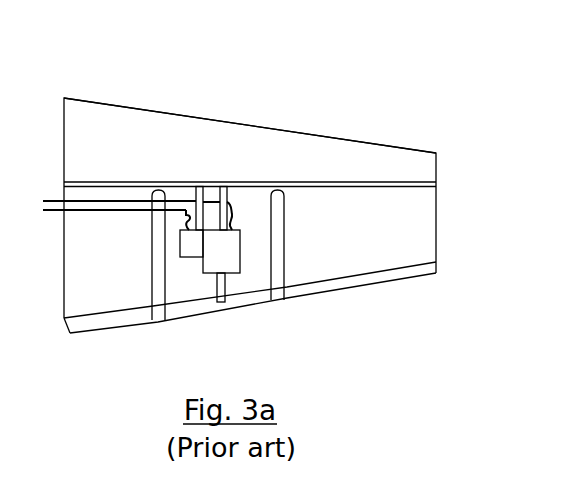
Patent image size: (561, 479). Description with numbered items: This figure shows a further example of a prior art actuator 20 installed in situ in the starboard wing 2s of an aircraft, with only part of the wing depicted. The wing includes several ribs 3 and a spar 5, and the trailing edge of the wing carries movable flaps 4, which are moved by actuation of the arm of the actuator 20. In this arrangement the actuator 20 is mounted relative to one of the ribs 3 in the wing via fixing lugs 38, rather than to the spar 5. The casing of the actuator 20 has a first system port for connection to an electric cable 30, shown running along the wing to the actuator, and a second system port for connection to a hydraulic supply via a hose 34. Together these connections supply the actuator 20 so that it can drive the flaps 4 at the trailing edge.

The starboard wing 2s is at (313, 168).
The ribs 3 is at (275, 193).
The movable flaps 4 is at (235, 297).
The spar 5 is at (122, 182).
The actuator 20 is at (228, 268).
The electric cable 30 is at (58, 204).
The hose 34 is at (182, 199).
The fixing lugs 38 is at (223, 197).